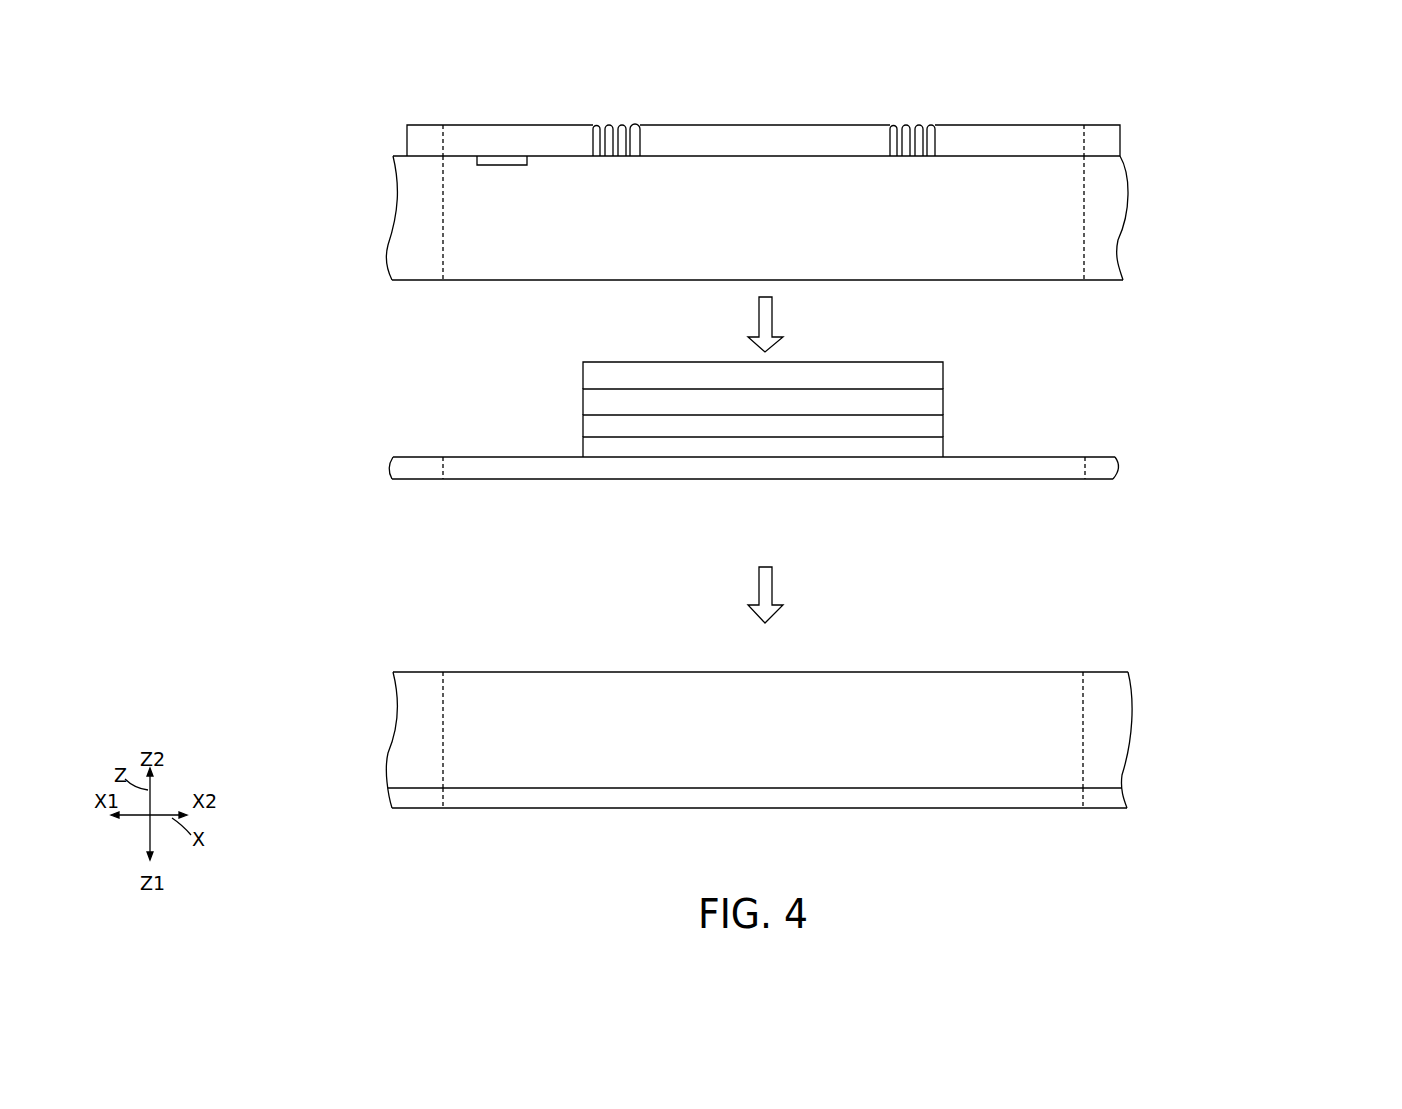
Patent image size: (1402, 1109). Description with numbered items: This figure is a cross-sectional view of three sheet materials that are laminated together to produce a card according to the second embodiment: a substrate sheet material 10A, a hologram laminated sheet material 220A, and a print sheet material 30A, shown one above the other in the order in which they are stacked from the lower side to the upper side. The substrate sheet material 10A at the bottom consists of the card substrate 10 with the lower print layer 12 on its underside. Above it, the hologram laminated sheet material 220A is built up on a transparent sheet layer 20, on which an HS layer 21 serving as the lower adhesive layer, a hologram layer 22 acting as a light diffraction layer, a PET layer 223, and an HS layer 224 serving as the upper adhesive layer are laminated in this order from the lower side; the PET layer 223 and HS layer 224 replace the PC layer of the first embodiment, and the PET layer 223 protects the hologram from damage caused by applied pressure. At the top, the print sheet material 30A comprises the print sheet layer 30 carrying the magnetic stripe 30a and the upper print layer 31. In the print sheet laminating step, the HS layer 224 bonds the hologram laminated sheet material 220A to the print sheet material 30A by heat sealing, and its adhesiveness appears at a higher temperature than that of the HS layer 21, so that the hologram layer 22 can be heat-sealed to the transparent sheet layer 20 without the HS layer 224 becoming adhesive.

The print sheet material 30A is at (302, 128).
The upper print layer 31 is at (1060, 138).
The print sheet layer 30 is at (1060, 220).
The magnetic stripe 30a is at (503, 162).
The hologram laminated sheet material 220A is at (304, 458).
The HS layer 224 is at (943, 368).
The PET layer 223 is at (943, 395).
The hologram layer 22 is at (943, 421).
The HS layer 21 is at (943, 445).
The transparent sheet layer 20 is at (1045, 470).
The substrate sheet material 10A is at (309, 673).
The card substrate 10 is at (1052, 735).
The lower print layer 12 is at (1045, 795).